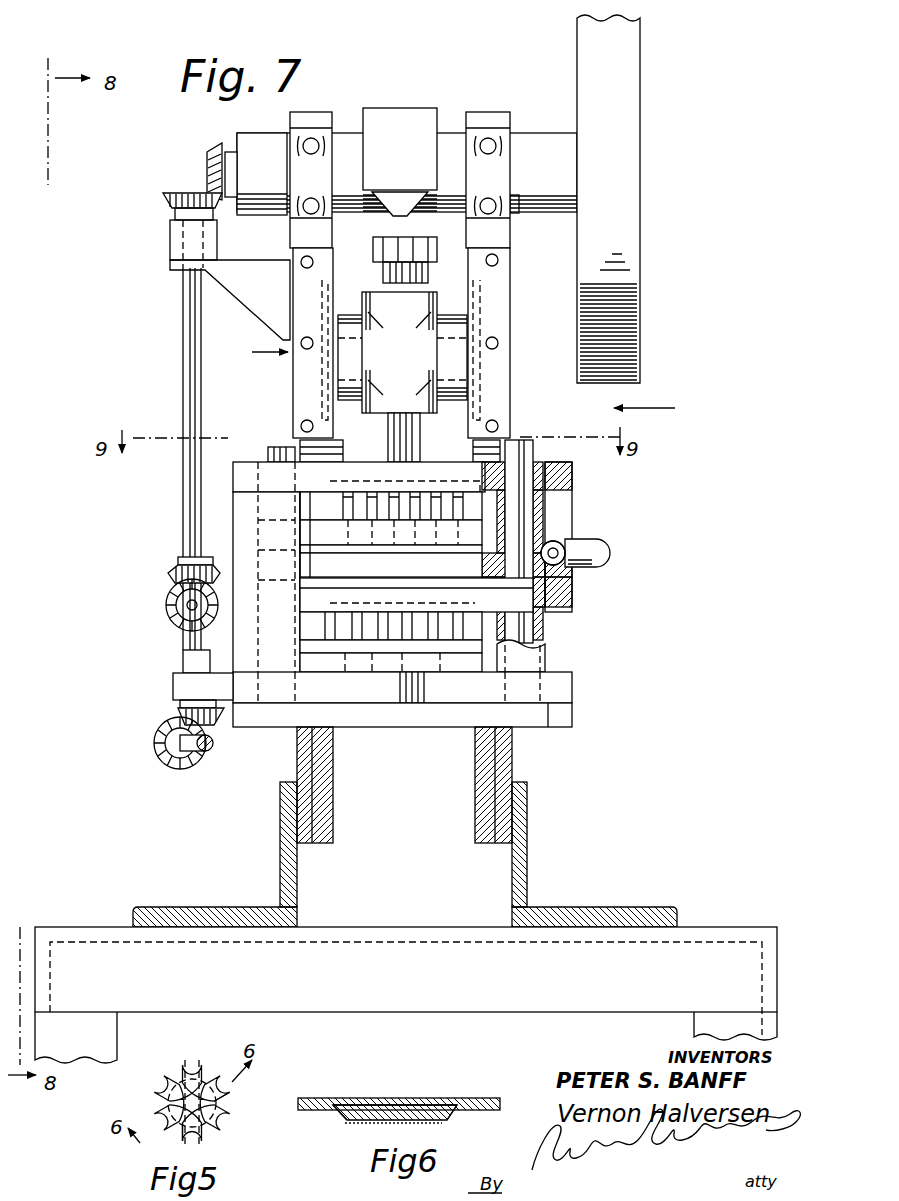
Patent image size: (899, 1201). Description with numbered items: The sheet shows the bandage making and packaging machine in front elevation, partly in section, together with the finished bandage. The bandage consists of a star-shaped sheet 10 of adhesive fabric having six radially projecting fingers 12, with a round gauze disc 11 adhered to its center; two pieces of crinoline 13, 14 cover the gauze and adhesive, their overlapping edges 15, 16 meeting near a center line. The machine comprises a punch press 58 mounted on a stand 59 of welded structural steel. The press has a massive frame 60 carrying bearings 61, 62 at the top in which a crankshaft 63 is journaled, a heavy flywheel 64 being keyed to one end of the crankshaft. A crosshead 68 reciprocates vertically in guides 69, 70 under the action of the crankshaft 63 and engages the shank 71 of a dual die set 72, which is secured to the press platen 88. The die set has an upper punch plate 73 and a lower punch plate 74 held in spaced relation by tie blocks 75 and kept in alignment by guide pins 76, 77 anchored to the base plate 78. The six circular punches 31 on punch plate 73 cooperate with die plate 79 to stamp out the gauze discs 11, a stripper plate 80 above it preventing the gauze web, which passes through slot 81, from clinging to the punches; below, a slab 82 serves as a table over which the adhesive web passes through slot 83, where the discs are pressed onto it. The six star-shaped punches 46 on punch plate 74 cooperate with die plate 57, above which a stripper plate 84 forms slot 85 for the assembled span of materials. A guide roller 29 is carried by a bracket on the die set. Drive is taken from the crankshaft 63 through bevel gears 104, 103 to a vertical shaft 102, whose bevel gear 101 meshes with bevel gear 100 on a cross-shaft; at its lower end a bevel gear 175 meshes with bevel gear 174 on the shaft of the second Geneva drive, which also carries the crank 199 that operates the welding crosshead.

In FIG. 5, the sheet of adhesive fabric 10 is at (161, 1068).
In FIG. 6, the sheet of adhesive fabric 10 is at (324, 1101).
In FIG. 5, the gauze disc 11 is at (155, 1094).
In FIG. 6, the gauze disc 11 is at (424, 1101).
In FIG. 5, the fingers 12 is at (240, 1125).
In FIG. 6, the crinoline piece 13 is at (338, 1122).
In FIG. 6, the crinoline piece 14 is at (452, 1116).
In FIG. 5, the overlapping edge 15 is at (204, 1128).
In FIG. 6, the overlapping edge 15 is at (418, 1122).
In FIG. 5, the overlapping edge 16 is at (172, 1140).
In FIG. 6, the overlapping edge 16 is at (382, 1106).
In FIG. 7, the guide roller 29 is at (582, 560).
In FIG. 7, the circular punches 31 is at (470, 512).
In FIG. 7, the star-shaped punches 46 is at (468, 632).
In FIG. 7, the die plate 57 is at (334, 660).
In FIG. 7, the punch press 58 is at (463, 382).
In FIG. 7, the stand 59 is at (76, 927).
In FIG. 7, the frame 60 is at (297, 751).
In FIG. 7, the bearing 61 is at (306, 138).
In FIG. 7, the bearing 62 is at (483, 136).
In FIG. 7, the crankshaft 63 is at (523, 207).
In FIG. 7, the flywheel 64 is at (630, 242).
In FIG. 7, the crosshead 68 is at (456, 361).
In FIG. 7, the guide 69 is at (300, 381).
In FIG. 7, the guide 70 is at (497, 309).
In FIG. 7, the shank 71 is at (410, 442).
In FIG. 7, the dual die set 72 is at (235, 523).
In FIG. 7, the upper punch plate 73 is at (238, 479).
In FIG. 7, the lower punch plate 74 is at (563, 609).
In FIG. 7, the tie blocks 75 is at (230, 506).
In FIG. 7, the guide pin 76 is at (272, 446).
In FIG. 7, the guide pin 77 is at (523, 441).
In FIG. 7, the base plate 78 is at (548, 727).
In FIG. 7, the die plate 79 is at (392, 530).
In FIG. 7, the stripper plate 80 is at (416, 596).
In FIG. 7, the slot 81 is at (428, 527).
In FIG. 7, the slab 82 is at (352, 534).
In FIG. 7, the slot 83 is at (440, 527).
In FIG. 7, the stripper plate 84 is at (380, 655).
In FIG. 7, the slot 85 is at (490, 673).
In FIG. 7, the press platen 88 is at (575, 718).
In FIG. 7, the bevel gear 100 is at (168, 607).
In FIG. 7, the bevel gear 101 is at (178, 571).
In FIG. 7, the vertical shaft 102 is at (183, 367).
In FIG. 7, the bevel gear 103 is at (174, 198).
In FIG. 7, the bevel gear 104 is at (211, 160).
In FIG. 7, the bevel gear 174 is at (157, 762).
In FIG. 7, the bevel gear 175 is at (178, 715).
In FIG. 7, the crank 199 is at (612, 548).